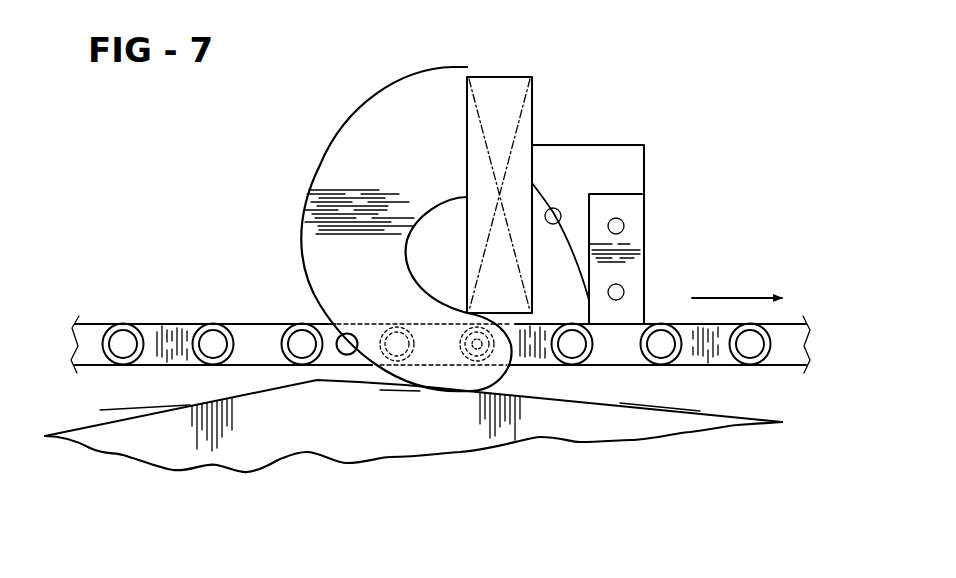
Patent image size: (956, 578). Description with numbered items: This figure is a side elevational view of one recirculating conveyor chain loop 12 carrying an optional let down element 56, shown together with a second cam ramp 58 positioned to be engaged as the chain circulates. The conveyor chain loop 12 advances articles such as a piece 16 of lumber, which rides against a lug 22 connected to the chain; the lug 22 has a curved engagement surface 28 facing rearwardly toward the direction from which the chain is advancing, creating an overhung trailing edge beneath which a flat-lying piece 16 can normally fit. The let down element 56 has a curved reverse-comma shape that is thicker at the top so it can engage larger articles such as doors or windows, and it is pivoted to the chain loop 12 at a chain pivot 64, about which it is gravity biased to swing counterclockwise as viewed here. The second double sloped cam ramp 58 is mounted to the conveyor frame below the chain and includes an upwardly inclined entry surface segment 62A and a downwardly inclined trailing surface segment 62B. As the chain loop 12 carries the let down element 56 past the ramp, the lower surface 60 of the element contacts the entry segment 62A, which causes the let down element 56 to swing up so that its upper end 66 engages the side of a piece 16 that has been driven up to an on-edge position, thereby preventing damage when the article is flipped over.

The conveyor chain loop 12 is at (186, 321).
The piece 16 is at (536, 105).
The lug 22 is at (664, 228).
The curved engagement surface 28 is at (559, 220).
The let down element 56 is at (393, 78).
The second double sloped cam ramp 58 is at (277, 384).
The lower surface 60 is at (390, 395).
The upwardly inclined entry surface segment 62A is at (187, 405).
The downwardly inclined trailing surface segment 62B is at (623, 403).
The chain pivot 64 is at (485, 348).
The upper end 66 is at (468, 117).